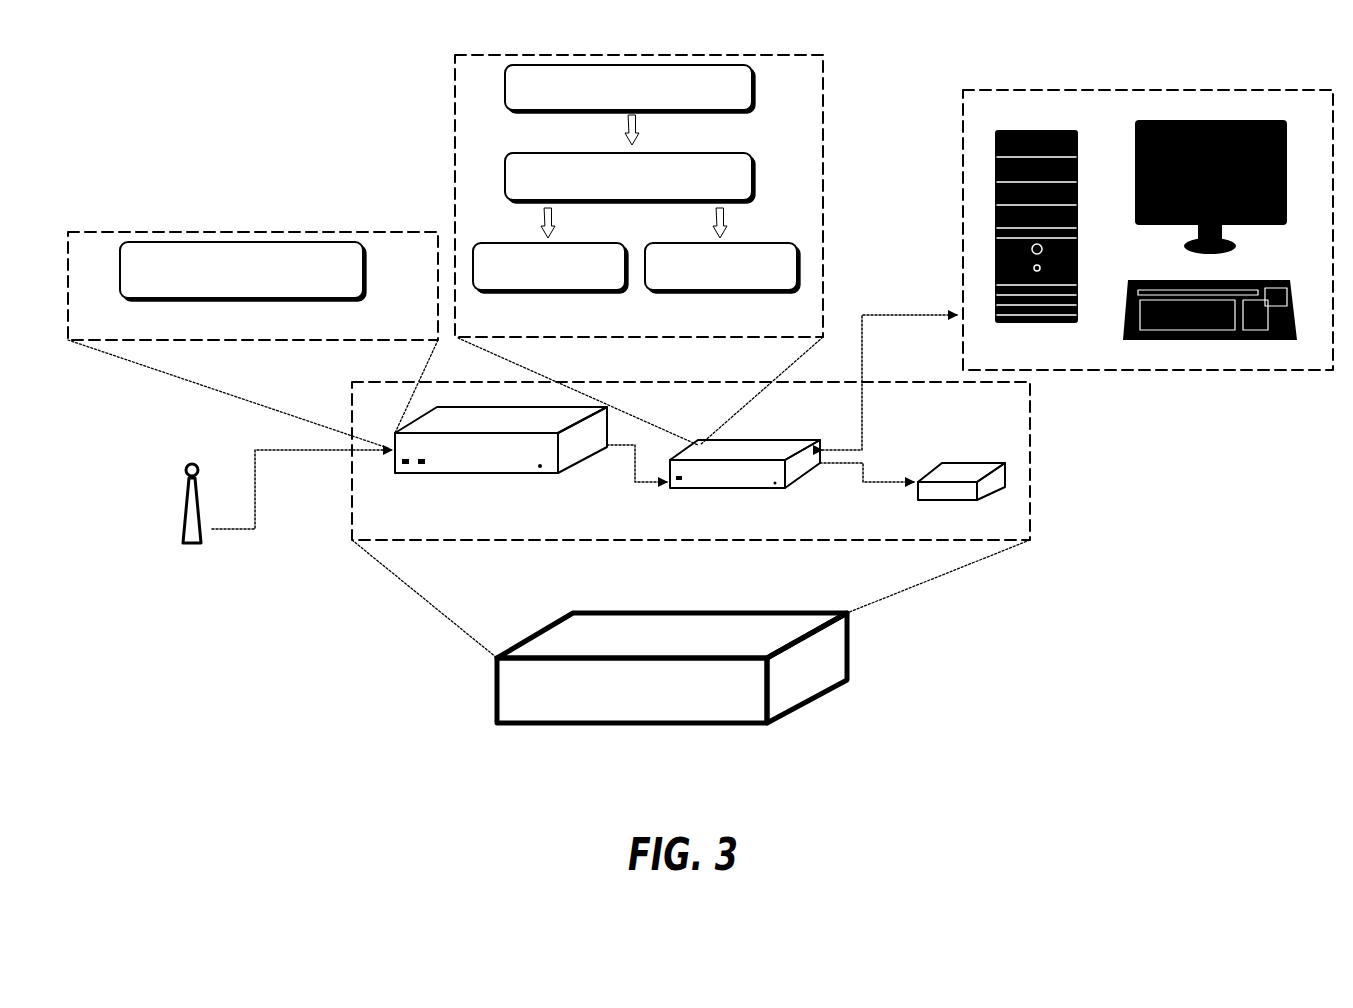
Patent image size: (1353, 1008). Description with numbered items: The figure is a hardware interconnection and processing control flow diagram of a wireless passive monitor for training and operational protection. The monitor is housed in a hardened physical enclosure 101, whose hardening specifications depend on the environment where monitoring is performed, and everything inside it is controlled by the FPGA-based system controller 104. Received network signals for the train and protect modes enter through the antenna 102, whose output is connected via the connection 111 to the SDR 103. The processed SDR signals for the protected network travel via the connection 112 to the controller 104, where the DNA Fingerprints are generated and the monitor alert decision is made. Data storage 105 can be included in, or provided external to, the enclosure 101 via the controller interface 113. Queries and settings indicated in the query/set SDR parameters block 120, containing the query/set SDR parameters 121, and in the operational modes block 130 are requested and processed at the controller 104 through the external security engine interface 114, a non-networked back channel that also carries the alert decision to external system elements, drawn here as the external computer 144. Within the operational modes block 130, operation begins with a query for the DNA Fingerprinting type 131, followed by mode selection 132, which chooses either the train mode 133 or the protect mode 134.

The hardened physical enclosure 101 is at (672, 668).
The antenna 102 is at (190, 545).
The SDR 103 is at (397, 473).
The FPGA-based system controller 104 is at (672, 488).
The data storage 105 is at (920, 500).
The antenna-to-SDR connection 111 is at (257, 482).
The SDR-to-controller connection 112 is at (628, 467).
The controller interface 113 is at (867, 468).
The external security engine interface 114 is at (865, 325).
The query/set SDR parameters block 120 is at (253, 286).
The query/set SDR parameters 121 is at (340, 298).
The operational modes block 130 is at (639, 196).
The DNA Fingerprinting type query 131 is at (728, 110).
The mode selection 132 is at (735, 200).
The train mode 133 is at (548, 290).
The protect mode 134 is at (720, 290).
The computer 144 is at (1148, 230).